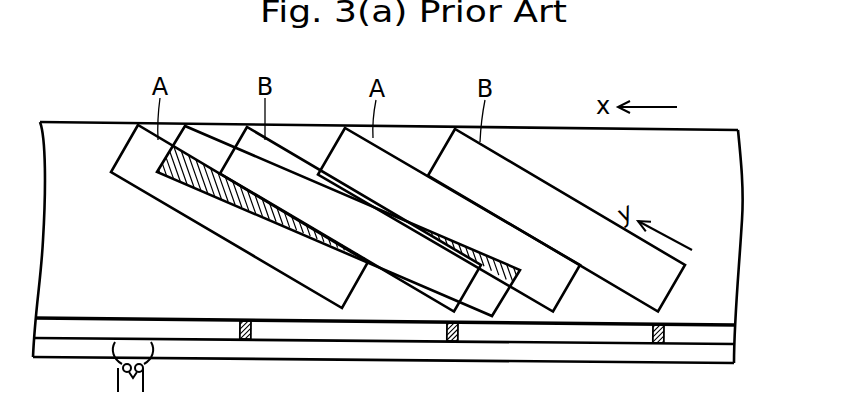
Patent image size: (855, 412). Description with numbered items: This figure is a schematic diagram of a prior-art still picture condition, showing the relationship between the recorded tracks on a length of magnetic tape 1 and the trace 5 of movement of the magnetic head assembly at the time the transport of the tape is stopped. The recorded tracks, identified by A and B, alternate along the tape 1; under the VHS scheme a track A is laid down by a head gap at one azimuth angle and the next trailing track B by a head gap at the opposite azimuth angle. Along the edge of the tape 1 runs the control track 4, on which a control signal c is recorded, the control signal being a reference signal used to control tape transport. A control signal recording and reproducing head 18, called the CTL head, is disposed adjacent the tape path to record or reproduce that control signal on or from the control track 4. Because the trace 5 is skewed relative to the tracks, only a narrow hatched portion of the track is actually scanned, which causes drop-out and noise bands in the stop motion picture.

The magnetic tape 1 is at (705, 140).
The control track 4 is at (705, 335).
The trace 5 is at (209, 140).
The control signal recording and reproducing head 18 is at (148, 365).